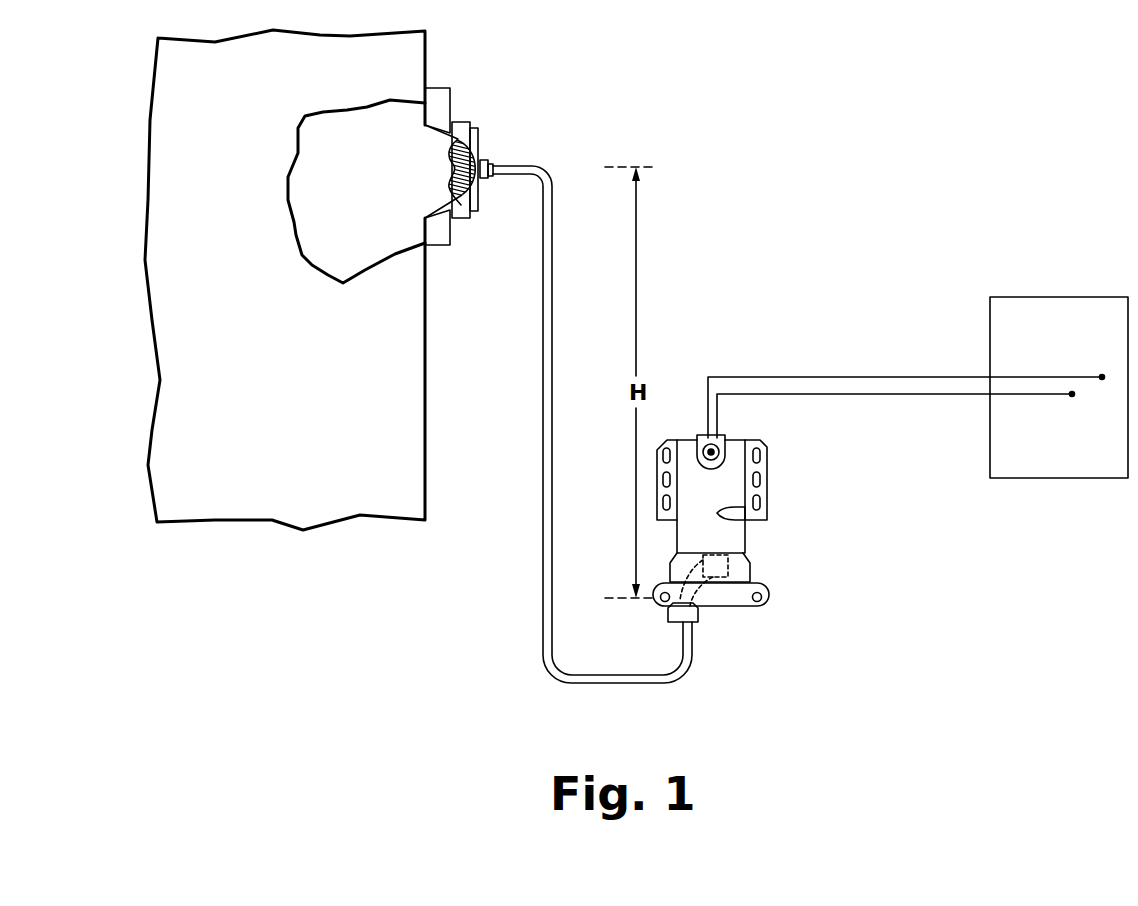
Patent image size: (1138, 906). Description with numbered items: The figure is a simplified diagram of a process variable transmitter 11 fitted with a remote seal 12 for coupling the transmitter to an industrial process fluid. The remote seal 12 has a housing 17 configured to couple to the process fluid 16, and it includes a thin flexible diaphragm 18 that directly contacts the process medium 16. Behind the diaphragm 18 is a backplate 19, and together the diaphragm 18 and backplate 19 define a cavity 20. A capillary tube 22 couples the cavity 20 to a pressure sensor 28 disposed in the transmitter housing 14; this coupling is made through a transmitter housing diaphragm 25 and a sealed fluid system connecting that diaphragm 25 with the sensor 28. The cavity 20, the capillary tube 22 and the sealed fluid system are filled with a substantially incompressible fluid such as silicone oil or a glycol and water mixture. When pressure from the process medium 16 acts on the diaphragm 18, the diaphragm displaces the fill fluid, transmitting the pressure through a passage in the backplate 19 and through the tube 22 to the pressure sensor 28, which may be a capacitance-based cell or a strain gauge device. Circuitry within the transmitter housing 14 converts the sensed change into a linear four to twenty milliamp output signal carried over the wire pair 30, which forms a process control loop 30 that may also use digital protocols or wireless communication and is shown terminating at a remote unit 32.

The process variable transmitter 11 is at (714, 657).
The remote seal 12 is at (462, 106).
The transmitter housing 14 is at (737, 440).
The process fluid 16 is at (327, 235).
The housing 17 is at (452, 247).
The diaphragm 18 is at (448, 177).
The backplate 19 is at (452, 145).
The cavity 20 is at (468, 140).
The capillary tube 22 is at (553, 225).
The transmitter housing diaphragm 25 is at (700, 607).
The pressure sensor 28 is at (730, 572).
The wire pair 30 is at (830, 377).
The control system 32 is at (1050, 297).